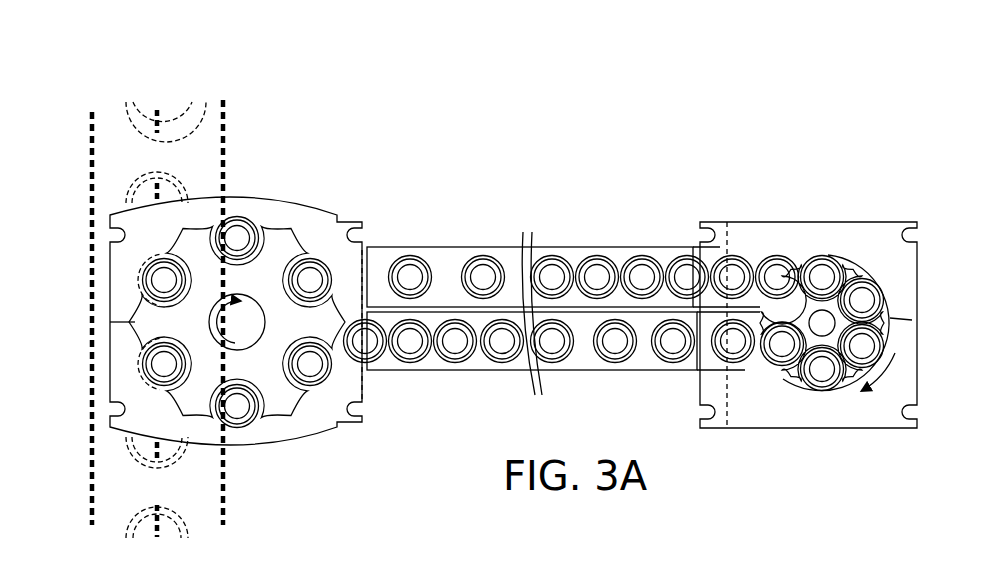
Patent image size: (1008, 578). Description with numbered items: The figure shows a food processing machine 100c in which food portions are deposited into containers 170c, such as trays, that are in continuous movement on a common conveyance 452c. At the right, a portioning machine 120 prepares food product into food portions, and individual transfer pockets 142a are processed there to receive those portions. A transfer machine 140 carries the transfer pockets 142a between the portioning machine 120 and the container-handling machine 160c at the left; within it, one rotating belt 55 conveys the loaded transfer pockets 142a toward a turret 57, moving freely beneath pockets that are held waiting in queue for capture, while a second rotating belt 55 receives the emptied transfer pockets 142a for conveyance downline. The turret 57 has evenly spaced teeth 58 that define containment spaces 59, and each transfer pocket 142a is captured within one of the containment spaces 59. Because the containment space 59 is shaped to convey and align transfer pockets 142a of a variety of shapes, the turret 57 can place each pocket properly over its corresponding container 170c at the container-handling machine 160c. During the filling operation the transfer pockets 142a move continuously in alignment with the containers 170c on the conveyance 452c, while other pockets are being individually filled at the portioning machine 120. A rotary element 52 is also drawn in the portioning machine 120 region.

The food processing machine 100c is at (789, 115).
The common conveyance 452c is at (92, 135).
The containers 170c is at (182, 180).
The container-handling machine 160c is at (304, 190).
The containment space 59 is at (288, 284).
The teeth 58 is at (273, 402).
The turret 57 is at (304, 401).
The transfer machine 140 is at (481, 229).
The rotating belt 55 is at (435, 246).
The transfer pockets 142a is at (628, 255).
The portioning machine 120 is at (862, 199).
The rotary wheel 52 is at (846, 268).